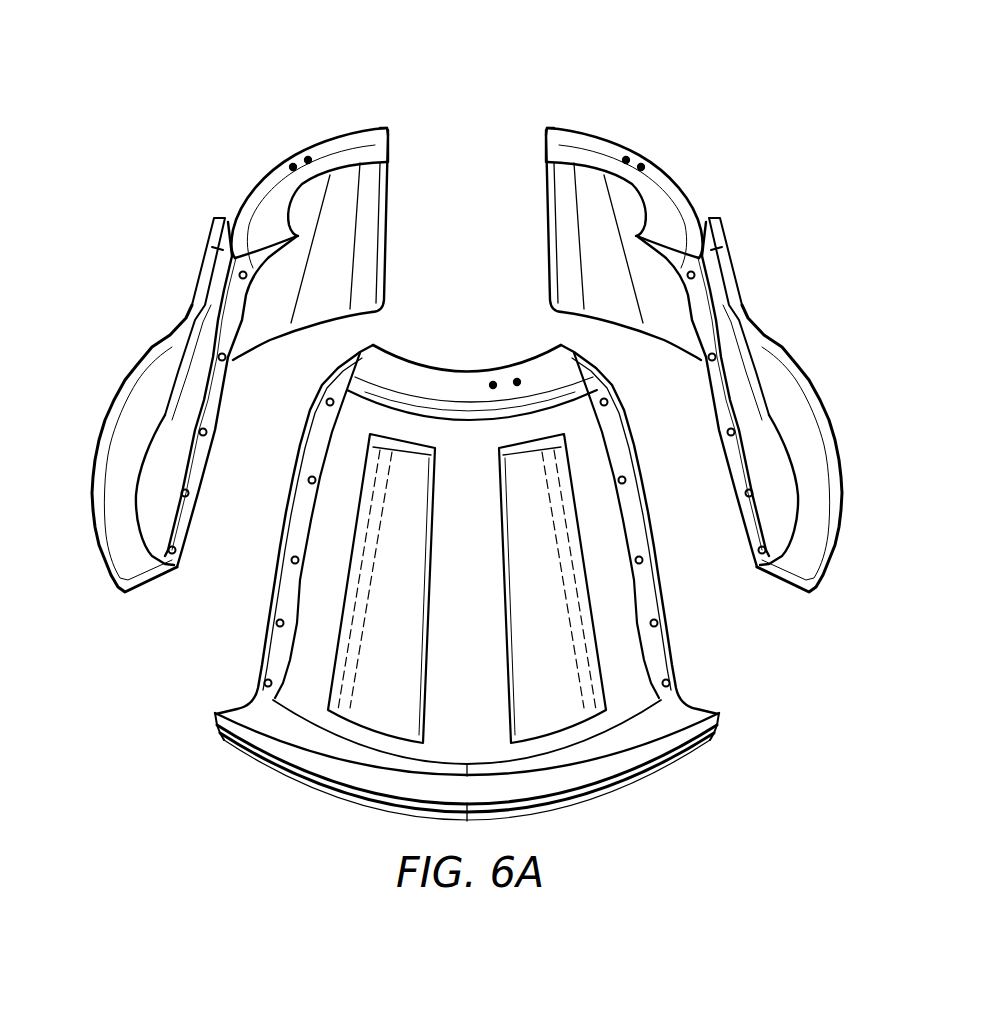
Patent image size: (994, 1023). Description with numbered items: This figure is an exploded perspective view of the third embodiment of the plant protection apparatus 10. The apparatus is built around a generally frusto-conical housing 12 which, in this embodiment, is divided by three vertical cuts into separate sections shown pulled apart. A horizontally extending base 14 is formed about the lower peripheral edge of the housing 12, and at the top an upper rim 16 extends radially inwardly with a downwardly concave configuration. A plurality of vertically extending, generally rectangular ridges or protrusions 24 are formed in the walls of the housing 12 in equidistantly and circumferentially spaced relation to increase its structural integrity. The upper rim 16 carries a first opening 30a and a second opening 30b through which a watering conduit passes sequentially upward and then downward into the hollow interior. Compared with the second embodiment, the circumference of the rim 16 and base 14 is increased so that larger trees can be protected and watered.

The plant protection apparatus 10 is at (548, 48).
The housing 12 is at (452, 534).
The base 14 is at (123, 444).
The upper rim 16 is at (427, 386).
The ridges or protrusions 24 is at (366, 667).
The first opening 30a is at (627, 156).
The second opening 30b is at (641, 167).